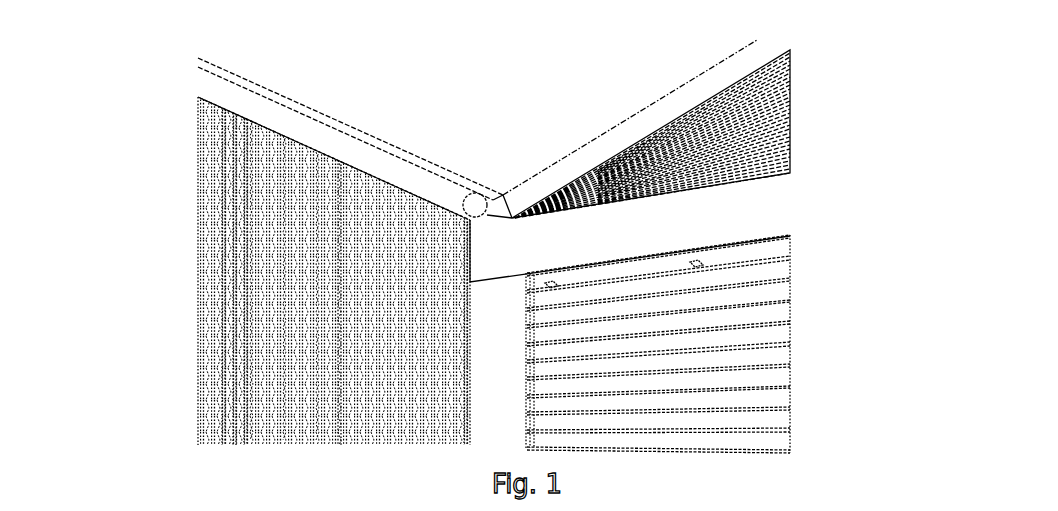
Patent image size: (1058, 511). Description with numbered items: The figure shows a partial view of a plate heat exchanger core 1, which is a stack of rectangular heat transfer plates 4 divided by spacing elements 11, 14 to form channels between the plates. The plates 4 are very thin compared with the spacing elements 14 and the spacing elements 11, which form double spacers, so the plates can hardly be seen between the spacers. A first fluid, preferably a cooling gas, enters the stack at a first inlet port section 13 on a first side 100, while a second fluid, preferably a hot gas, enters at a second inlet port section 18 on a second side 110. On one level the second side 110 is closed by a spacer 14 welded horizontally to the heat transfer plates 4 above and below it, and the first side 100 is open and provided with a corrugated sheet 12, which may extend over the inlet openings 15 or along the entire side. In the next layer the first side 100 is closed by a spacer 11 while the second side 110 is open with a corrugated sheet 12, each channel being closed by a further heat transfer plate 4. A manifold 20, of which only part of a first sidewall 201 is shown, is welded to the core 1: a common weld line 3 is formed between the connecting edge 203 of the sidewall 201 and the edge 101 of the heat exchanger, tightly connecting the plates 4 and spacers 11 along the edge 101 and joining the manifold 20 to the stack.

The plate heat exchanger core 1 is at (706, 459).
The common weld line 3 is at (218, 90).
The heat transfer plate 4 is at (775, 335).
The spacing element 11 is at (770, 108).
The corrugated sheet 12 is at (773, 145).
The first inlet port section 13 is at (713, 163).
The spacing element 14 is at (237, 263).
The inlet openings 15 is at (278, 355).
The second inlet port section 18 is at (337, 403).
The manifold 20 is at (604, 67).
The first side 100 is at (788, 72).
The edge 101 is at (230, 113).
The second side 110 is at (233, 318).
The first sidewall 201 is at (353, 90).
The connecting edge 203 is at (242, 78).